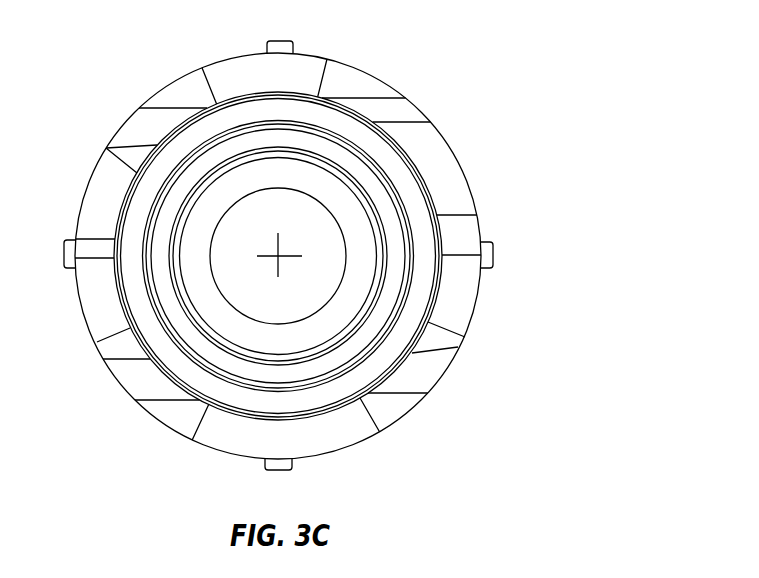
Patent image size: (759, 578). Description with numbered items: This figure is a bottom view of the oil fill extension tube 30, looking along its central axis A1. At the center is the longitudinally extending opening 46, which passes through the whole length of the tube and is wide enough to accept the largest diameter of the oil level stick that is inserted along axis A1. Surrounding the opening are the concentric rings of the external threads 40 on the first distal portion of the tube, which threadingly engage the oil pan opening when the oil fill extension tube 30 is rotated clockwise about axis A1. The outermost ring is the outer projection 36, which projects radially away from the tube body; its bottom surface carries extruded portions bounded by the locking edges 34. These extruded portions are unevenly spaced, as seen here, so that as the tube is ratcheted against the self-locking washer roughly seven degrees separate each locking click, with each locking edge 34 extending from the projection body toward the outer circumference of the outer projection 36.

The oil fill extension tube 30 is at (528, 98).
The locking edges 34 is at (327, 82).
The outer projection 36 is at (412, 412).
The external threads 40 is at (268, 152).
The longitudinally extending opening 46 is at (265, 267).
The axis A1 is at (293, 254).